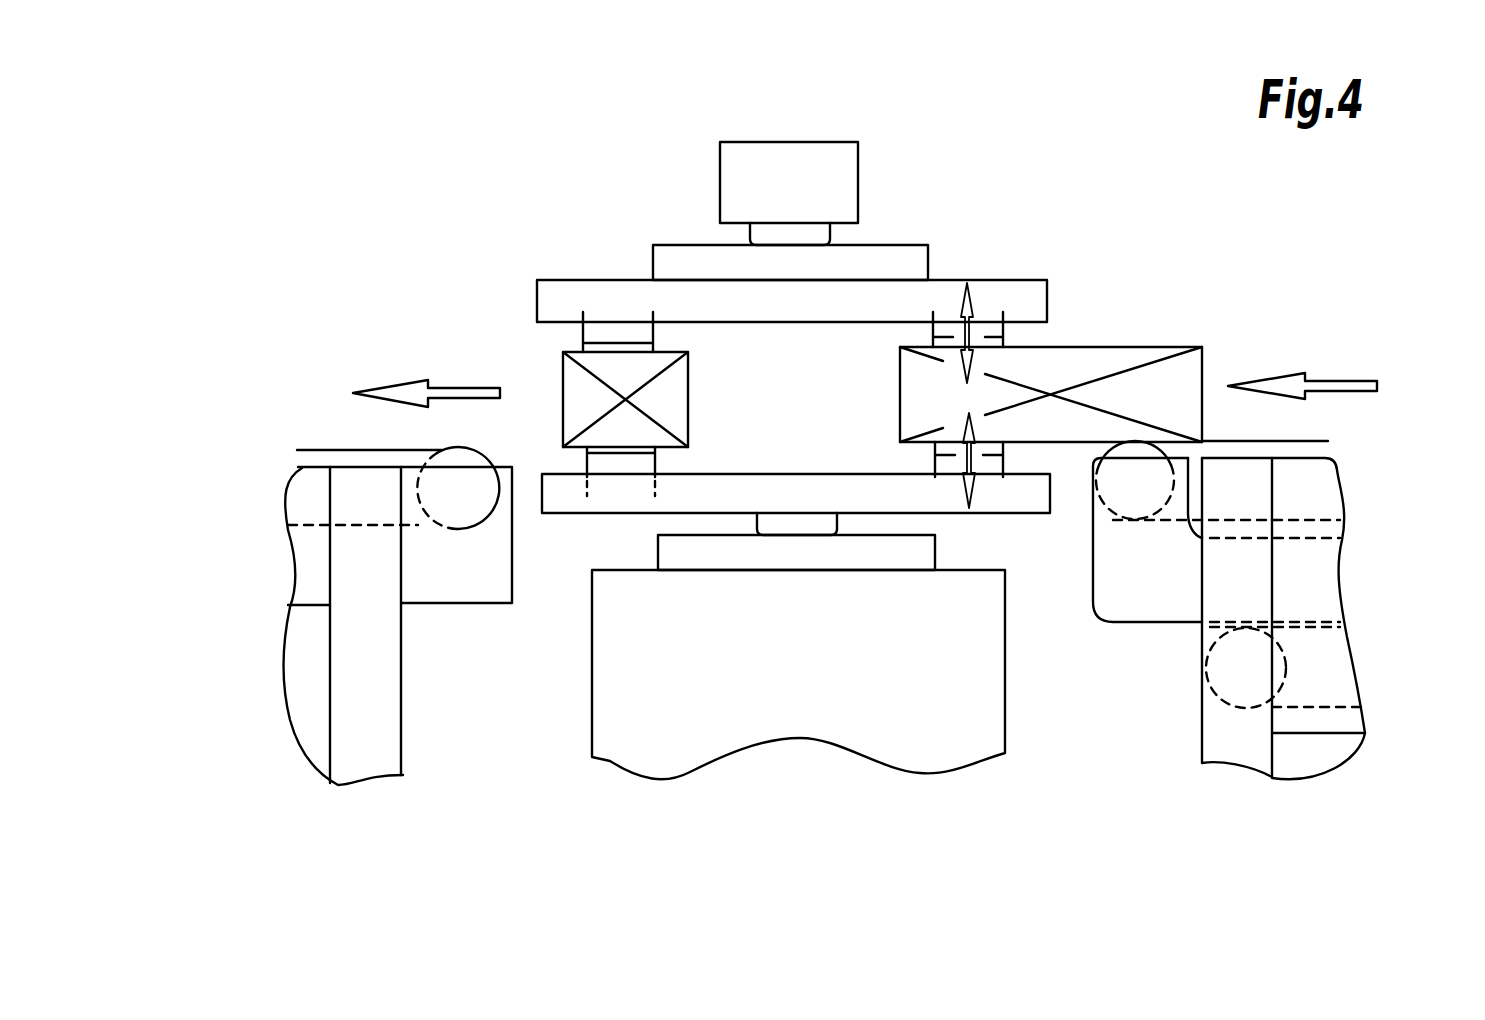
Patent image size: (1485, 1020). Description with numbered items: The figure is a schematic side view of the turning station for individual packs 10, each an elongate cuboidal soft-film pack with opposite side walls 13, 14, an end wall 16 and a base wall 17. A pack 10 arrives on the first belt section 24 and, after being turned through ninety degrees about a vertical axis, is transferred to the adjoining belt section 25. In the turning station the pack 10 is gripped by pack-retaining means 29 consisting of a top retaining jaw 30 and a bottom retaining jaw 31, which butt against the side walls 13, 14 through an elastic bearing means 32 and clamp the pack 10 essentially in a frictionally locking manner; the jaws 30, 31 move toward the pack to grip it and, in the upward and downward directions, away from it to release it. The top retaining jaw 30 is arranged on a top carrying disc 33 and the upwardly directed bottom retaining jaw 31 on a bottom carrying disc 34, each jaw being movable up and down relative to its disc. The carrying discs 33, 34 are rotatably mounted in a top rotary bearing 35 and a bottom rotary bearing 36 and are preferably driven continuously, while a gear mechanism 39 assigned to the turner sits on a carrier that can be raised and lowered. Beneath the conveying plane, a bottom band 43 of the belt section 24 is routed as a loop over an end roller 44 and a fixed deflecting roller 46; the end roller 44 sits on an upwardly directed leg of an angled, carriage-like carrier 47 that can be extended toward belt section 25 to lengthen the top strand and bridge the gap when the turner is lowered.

The pack 10 is at (490, 362).
The side wall 13 is at (567, 347).
The side wall 14 is at (688, 385).
The end wall 16 is at (898, 382).
The base wall 17 is at (1205, 367).
The first belt section 24 is at (1408, 364).
The belt section 25 is at (246, 403).
The pack-retaining means 29 is at (1019, 266).
The top retaining jaw 30 is at (628, 333).
The bottom retaining jaw 31 is at (618, 465).
The elastic bearing means 32 is at (600, 345).
The top carrying disc 33 is at (574, 264).
The bottom carrying disc 34 is at (556, 518).
The top rotary bearing 35 is at (850, 167).
The bottom rotary bearing 36 is at (793, 553).
The gear mechanism 39 is at (983, 740).
The bottom band 43 is at (1323, 523).
The end roller 44 is at (1115, 512).
The deflecting roller 46 is at (1228, 707).
The carrier 47 is at (1176, 612).